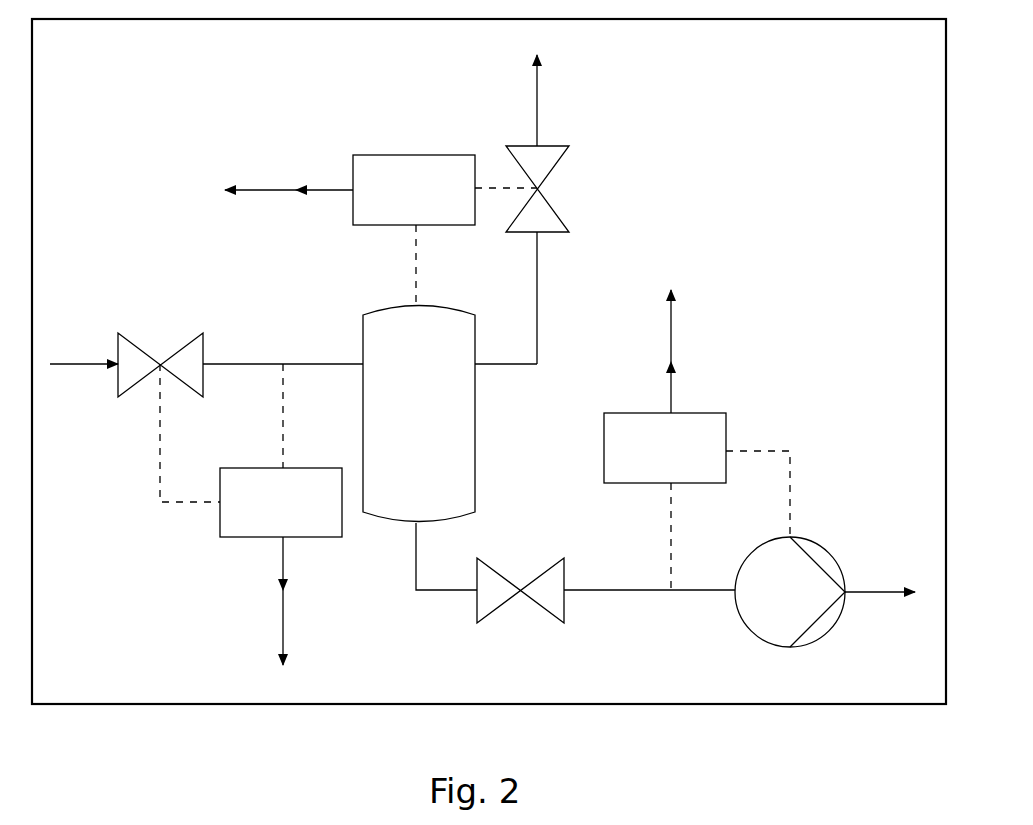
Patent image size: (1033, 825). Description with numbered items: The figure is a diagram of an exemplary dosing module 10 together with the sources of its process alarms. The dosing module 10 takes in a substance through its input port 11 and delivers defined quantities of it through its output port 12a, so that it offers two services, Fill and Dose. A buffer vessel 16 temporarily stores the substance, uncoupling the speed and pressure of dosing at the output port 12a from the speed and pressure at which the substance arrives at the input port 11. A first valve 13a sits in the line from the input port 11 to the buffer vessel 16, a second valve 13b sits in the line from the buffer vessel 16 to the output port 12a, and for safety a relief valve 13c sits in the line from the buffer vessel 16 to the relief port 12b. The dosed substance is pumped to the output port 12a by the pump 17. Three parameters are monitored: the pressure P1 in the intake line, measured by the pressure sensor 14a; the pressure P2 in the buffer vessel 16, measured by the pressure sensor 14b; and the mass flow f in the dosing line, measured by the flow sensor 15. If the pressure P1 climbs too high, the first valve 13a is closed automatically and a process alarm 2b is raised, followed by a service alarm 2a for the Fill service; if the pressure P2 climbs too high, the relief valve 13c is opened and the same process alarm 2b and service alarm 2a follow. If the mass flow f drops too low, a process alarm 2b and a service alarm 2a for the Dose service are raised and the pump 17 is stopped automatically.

The dosing module 10 is at (227, 705).
The input port 11 is at (70, 363).
The output port 12a is at (863, 590).
The relief port 12b is at (537, 88).
The first valve 13a is at (160, 364).
The second valve 13b is at (520, 595).
The relief valve 13c is at (537, 188).
The pressure sensor 14a is at (220, 520).
The pressure sensor 14b is at (426, 152).
The flow sensor 15 is at (690, 413).
The buffer vessel 16 is at (475, 424).
The pump 17 is at (815, 540).
The service alarm 2a is at (283, 625).
The process alarm 2b is at (283, 560).
The pressure P1 is at (283, 398).
The pressure P2 is at (416, 248).
The mass flow f is at (671, 500).